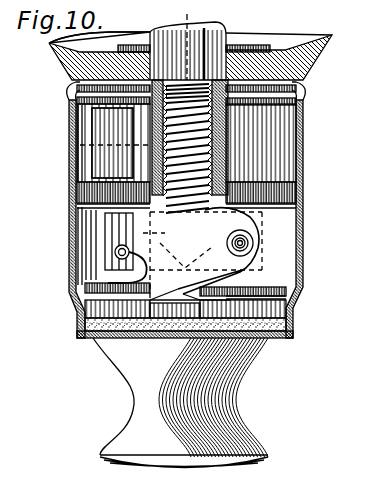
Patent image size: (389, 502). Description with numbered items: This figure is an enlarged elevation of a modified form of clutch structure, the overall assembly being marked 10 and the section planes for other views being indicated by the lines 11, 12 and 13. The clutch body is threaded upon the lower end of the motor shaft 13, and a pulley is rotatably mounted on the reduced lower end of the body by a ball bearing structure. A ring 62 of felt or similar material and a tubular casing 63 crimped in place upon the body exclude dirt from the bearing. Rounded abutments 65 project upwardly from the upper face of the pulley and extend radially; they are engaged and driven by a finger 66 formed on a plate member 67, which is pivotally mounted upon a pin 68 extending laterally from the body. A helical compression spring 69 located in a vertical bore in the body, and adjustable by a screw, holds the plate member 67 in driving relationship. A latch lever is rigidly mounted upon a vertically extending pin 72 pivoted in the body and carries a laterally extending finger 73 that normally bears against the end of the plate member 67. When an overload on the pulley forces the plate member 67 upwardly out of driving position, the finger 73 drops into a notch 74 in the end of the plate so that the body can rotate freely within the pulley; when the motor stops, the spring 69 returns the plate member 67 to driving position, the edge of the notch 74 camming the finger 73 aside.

The closure assembly 10 is at (75, 125).
The section line 11- 11 is at (208, 13).
The section line 12- 12 is at (69, 285).
The motor shaft 13 is at (228, 33).
The ring 62 is at (292, 330).
The tubular casing 63 is at (305, 193).
The rounded abutments 65 is at (183, 293).
The finger 66 is at (155, 297).
The plate member 67 is at (222, 270).
The pin 68 is at (257, 252).
The helical compression spring 69 is at (147, 185).
The vertically extending pin 72 is at (115, 232).
The laterally extending finger 73 is at (116, 252).
The notch 74 is at (110, 272).